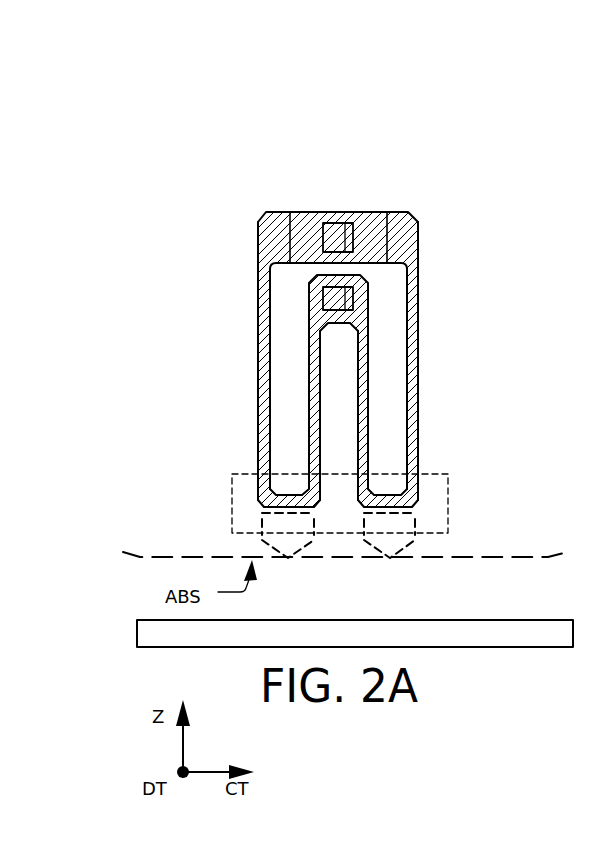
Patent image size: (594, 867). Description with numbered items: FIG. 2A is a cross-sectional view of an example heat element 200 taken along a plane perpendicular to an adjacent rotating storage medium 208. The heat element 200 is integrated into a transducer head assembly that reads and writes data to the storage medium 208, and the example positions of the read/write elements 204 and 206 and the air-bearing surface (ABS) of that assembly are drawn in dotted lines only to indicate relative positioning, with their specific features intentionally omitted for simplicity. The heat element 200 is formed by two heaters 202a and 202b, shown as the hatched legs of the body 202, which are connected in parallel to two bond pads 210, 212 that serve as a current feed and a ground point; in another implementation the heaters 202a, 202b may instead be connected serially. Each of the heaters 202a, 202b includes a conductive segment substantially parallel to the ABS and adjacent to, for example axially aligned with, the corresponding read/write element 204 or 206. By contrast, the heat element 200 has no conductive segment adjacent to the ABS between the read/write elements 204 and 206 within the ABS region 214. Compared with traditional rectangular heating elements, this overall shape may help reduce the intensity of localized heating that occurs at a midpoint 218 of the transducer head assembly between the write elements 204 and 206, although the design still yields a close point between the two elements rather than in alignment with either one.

The heat element 200 is at (158, 107).
The heaters 202 is at (277, 247).
The heater 202a is at (258, 355).
The heater 202b is at (410, 357).
The read/write element 204 is at (277, 533).
The read/write element 206 is at (402, 530).
The storage medium 208 is at (137, 628).
The bond pad 210 is at (345, 223).
The bond pad 212 is at (345, 297).
The ABS region 214 is at (432, 472).
The midpoint 218 is at (338, 503).